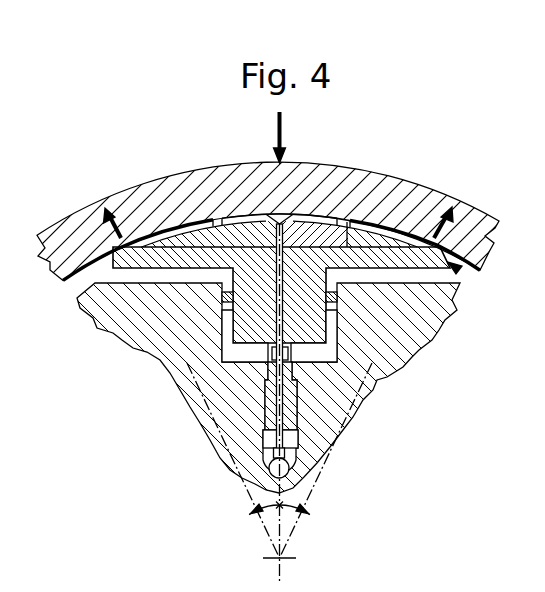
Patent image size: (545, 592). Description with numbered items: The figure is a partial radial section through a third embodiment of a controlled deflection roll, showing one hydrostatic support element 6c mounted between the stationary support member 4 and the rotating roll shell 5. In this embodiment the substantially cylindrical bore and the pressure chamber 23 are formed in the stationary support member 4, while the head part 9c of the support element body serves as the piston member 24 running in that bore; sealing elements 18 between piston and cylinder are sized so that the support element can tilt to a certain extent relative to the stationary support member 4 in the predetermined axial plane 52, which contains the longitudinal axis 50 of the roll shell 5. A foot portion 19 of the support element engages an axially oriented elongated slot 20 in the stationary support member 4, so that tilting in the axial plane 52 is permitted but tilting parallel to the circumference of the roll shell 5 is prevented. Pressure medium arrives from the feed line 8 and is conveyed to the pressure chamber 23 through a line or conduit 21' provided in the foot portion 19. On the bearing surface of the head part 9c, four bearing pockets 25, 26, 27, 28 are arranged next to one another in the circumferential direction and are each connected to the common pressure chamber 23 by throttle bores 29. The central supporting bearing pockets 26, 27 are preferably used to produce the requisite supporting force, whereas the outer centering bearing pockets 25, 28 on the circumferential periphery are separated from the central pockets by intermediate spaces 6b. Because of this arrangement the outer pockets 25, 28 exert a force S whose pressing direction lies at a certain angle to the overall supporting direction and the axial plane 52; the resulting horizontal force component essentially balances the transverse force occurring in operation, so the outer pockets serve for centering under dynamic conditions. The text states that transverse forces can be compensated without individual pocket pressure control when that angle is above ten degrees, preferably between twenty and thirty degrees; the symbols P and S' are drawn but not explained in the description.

The stationary support member 4 is at (373, 382).
The roll shell 5 is at (484, 236).
The intermediate spaces 6b is at (182, 220).
The hydrostatic support element 6c is at (460, 267).
The feed line 8 is at (283, 470).
The head part 9c is at (107, 280).
The sealing elements 18 is at (228, 334).
The foot portion 19 is at (268, 418).
The elongated slot 20 is at (290, 438).
The line or conduit 21' is at (212, 342).
The pressure chamber 23 is at (327, 353).
The piston member 24 is at (222, 350).
The outer centering bearing pocket 25 is at (132, 237).
The central supporting bearing pocket 26 is at (238, 212).
The central supporting bearing pocket 27 is at (332, 198).
The outer centering bearing pocket 28 is at (455, 217).
The throttle bores 29 is at (291, 208).
The longitudinal axis 50 is at (278, 560).
The predetermined axial plane 52 is at (283, 518).
The pressing force P is at (285, 137).
The force S is at (254, 195).
The counter tension direction S' is at (267, 311).